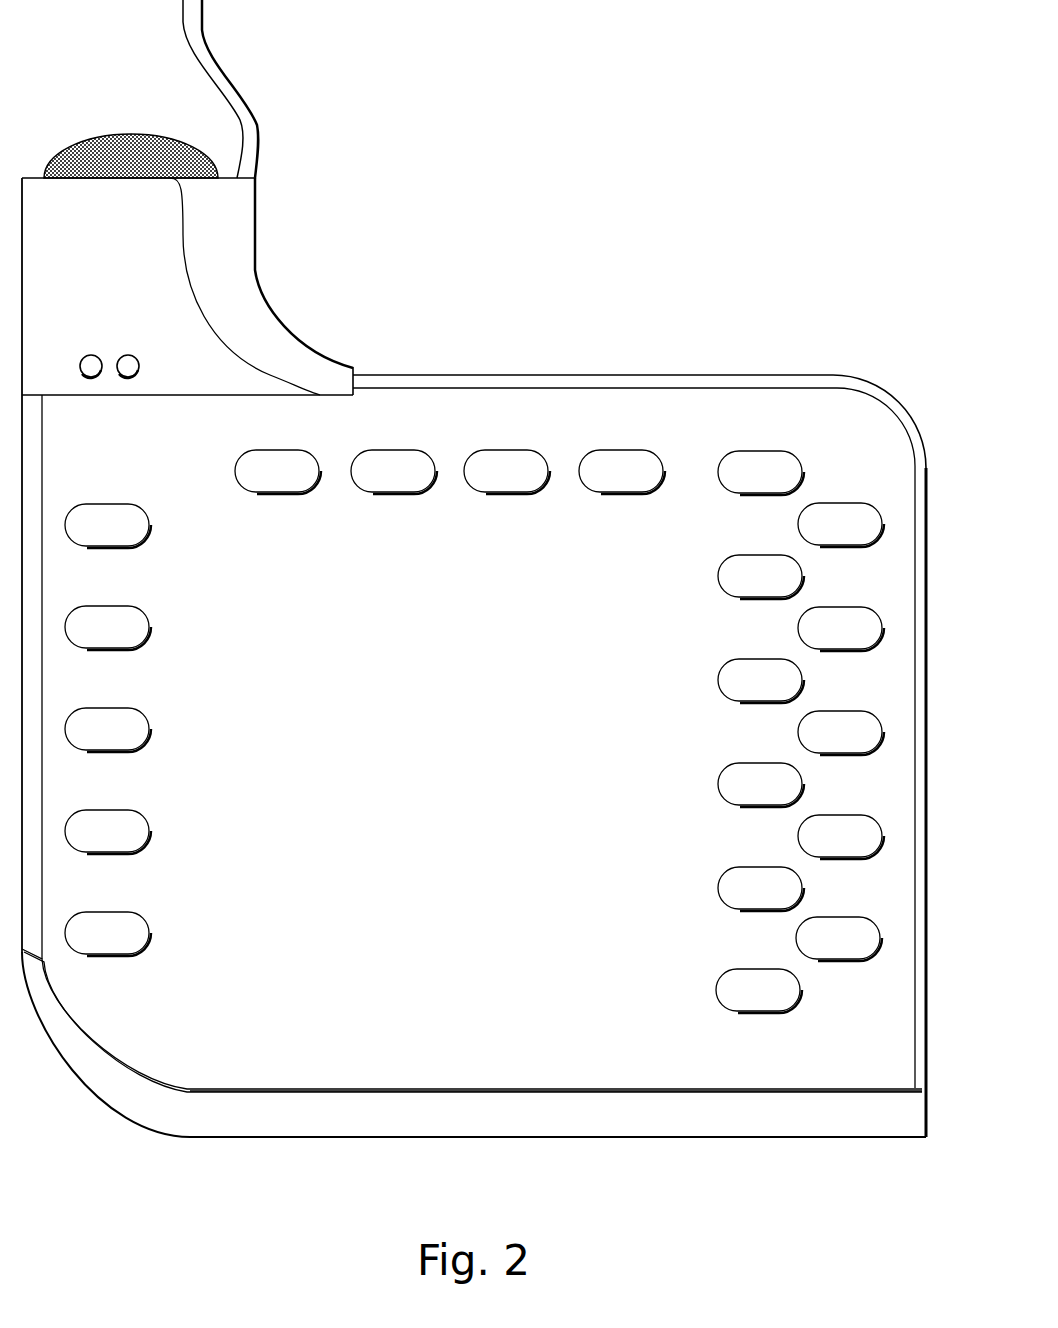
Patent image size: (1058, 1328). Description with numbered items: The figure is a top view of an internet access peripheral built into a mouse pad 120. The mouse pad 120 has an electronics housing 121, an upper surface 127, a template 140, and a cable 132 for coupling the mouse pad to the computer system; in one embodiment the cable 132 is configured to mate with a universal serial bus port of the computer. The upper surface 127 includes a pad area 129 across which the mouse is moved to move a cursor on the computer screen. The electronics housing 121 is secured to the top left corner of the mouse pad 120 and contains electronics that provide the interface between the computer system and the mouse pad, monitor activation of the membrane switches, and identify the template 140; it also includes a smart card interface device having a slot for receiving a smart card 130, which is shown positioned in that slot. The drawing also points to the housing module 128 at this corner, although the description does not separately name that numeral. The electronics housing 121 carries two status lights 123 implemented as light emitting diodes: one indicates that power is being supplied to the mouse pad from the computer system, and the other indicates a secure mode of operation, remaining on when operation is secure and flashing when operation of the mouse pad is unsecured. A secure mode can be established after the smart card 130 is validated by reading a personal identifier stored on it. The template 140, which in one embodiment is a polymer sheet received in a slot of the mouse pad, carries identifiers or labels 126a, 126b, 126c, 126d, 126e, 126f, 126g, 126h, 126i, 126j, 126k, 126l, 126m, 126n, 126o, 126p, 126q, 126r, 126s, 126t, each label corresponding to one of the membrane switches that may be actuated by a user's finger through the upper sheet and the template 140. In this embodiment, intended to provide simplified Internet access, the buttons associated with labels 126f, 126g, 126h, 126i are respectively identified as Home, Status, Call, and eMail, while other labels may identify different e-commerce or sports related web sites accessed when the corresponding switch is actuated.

The mouse pad 120 is at (767, 208).
The electronics housing 121 is at (168, 258).
The status lights 123 is at (128, 354).
The label 126a is at (150, 936).
The label 126b is at (150, 834).
The label 126c is at (150, 732).
The label 126d is at (150, 630).
The label 126e is at (150, 528).
The label 126f is at (293, 493).
The label 126g is at (417, 493).
The label 126h is at (507, 493).
The label 126i is at (627, 493).
The label 126j is at (718, 472).
The label 126k is at (798, 522).
The label 126l is at (718, 574).
The label 126m is at (798, 627).
The label 126n is at (718, 679).
The label 126o is at (798, 731).
The label 126p is at (718, 782).
The label 126q is at (798, 833).
The label 126r is at (718, 886).
The label 126s is at (796, 936).
The label 126t is at (716, 988).
The upper surface 127 is at (862, 422).
The handset 128 is at (36, 160).
The pad area 129 is at (387, 966).
The smart card 130 is at (131, 135).
The cable 132 is at (252, 128).
The template 140 is at (698, 1120).